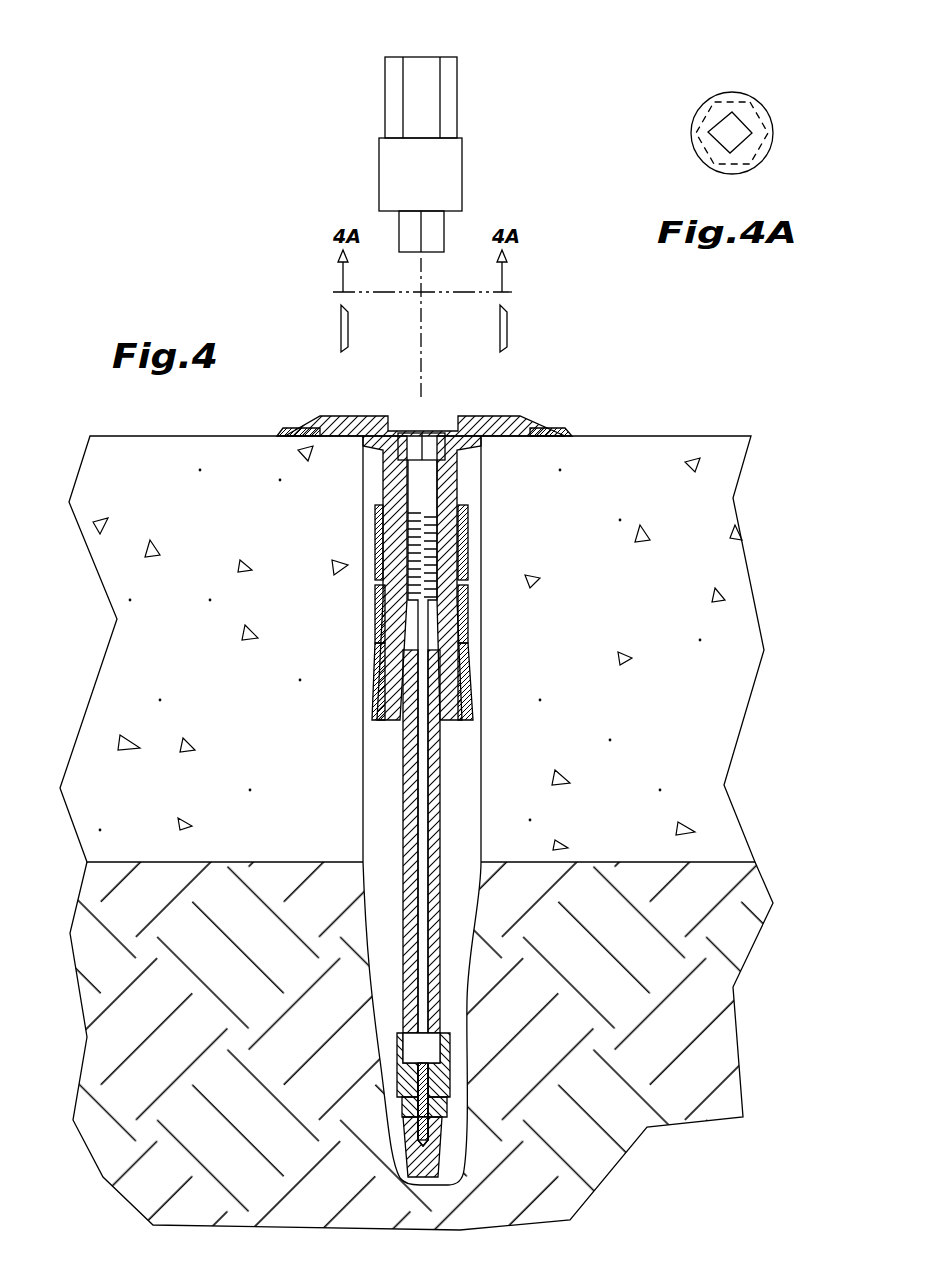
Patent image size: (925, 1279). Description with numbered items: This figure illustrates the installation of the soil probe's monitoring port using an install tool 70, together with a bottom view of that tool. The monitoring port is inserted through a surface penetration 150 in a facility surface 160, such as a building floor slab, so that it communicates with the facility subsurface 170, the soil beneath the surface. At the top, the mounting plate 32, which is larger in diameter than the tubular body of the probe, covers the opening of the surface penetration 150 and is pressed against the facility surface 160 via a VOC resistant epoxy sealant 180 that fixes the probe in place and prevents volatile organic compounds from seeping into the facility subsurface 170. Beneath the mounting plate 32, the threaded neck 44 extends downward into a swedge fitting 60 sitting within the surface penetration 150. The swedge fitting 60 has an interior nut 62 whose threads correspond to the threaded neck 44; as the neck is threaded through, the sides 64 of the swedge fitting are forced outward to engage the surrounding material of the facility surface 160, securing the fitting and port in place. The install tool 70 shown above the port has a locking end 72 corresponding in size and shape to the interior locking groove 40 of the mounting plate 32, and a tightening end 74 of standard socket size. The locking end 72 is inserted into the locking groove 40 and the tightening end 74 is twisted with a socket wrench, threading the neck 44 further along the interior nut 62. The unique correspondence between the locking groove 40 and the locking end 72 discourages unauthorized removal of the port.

In FIG. 4, the mounting plate 32 is at (495, 416).
In FIG. 4, the interior locking groove 40 is at (428, 450).
In FIG. 4, the threaded neck 44 is at (380, 546).
In FIG. 4, the swedge fitting 60 is at (470, 605).
In FIG. 4, the interior nut 62 is at (475, 698).
In FIG. 4, the sides of the swedge fitting 64 is at (373, 680).
In FIG. 4, the install tool 70 is at (462, 180).
In FIG. 4A, the install tool 70 is at (738, 92).
In FIG. 4, the locking end 72 is at (444, 233).
In FIG. 4A, the locking end 72 is at (737, 140).
In FIG. 4, the tightening end 74 is at (457, 100).
In FIG. 4A, the tightening end 74 is at (772, 118).
In FIG. 4, the surface penetration 150 is at (373, 511).
In FIG. 4, the facility surface 160 is at (730, 467).
In FIG. 4, the facility subsurface 170 is at (710, 987).
In FIG. 4, the VOC resistant epoxy sealant 180 is at (283, 430).